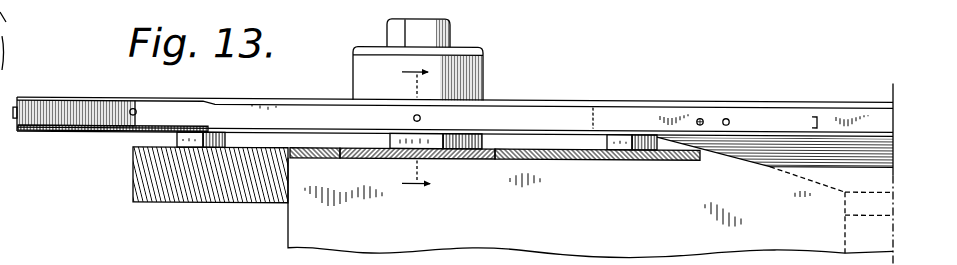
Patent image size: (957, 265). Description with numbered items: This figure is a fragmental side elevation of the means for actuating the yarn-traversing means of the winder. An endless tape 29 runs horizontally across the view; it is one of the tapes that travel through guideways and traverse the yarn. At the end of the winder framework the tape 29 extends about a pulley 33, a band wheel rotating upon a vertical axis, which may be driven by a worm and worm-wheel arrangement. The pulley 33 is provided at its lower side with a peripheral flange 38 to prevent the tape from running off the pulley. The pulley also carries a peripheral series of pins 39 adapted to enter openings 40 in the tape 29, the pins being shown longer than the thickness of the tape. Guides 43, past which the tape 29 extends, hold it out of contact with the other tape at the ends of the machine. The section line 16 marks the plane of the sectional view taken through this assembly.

The section line 16— 16 is at (416, 129).
The tape 29 is at (755, 115).
The pulley 33 is at (48, 96).
The peripheral flange 38 is at (16, 131).
The pins 39 is at (130, 109).
The openings 40 is at (726, 113).
The guides 43 is at (887, 146).